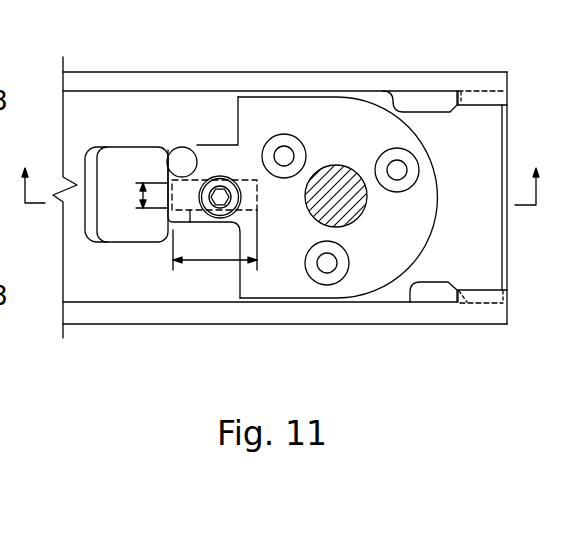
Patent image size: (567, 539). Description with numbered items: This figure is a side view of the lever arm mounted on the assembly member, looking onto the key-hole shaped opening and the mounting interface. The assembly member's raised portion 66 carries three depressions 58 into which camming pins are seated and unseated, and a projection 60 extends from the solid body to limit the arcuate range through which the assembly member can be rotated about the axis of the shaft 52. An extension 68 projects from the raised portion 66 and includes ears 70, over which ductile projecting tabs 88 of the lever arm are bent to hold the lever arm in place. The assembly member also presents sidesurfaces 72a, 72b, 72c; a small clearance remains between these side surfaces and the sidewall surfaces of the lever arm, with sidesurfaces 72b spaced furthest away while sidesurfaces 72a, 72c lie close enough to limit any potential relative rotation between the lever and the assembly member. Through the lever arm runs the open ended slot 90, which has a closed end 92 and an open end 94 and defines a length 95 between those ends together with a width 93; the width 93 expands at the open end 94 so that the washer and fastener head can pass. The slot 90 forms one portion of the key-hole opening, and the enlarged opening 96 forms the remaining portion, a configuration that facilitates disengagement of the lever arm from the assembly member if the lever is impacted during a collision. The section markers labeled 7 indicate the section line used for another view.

The shaft 52 is at (311, 208).
The depressions 58 is at (280, 134).
The projection 60 is at (179, 150).
The raised portion 66 is at (255, 285).
The extension 68 is at (500, 228).
The ears 70 is at (490, 104).
The sidesurface 72a is at (313, 97).
The sidesurface 72b is at (417, 112).
The sidesurface 72c is at (480, 92).
The ductile projecting tabs 88 is at (450, 99).
The open ended slot 90 is at (190, 222).
The closed end 92 is at (249, 183).
The width 93 is at (140, 196).
The open end 94 is at (177, 200).
The length 95 is at (218, 262).
The enlarged opening 96 is at (140, 235).
The section line 7- 7 is at (282, 169).